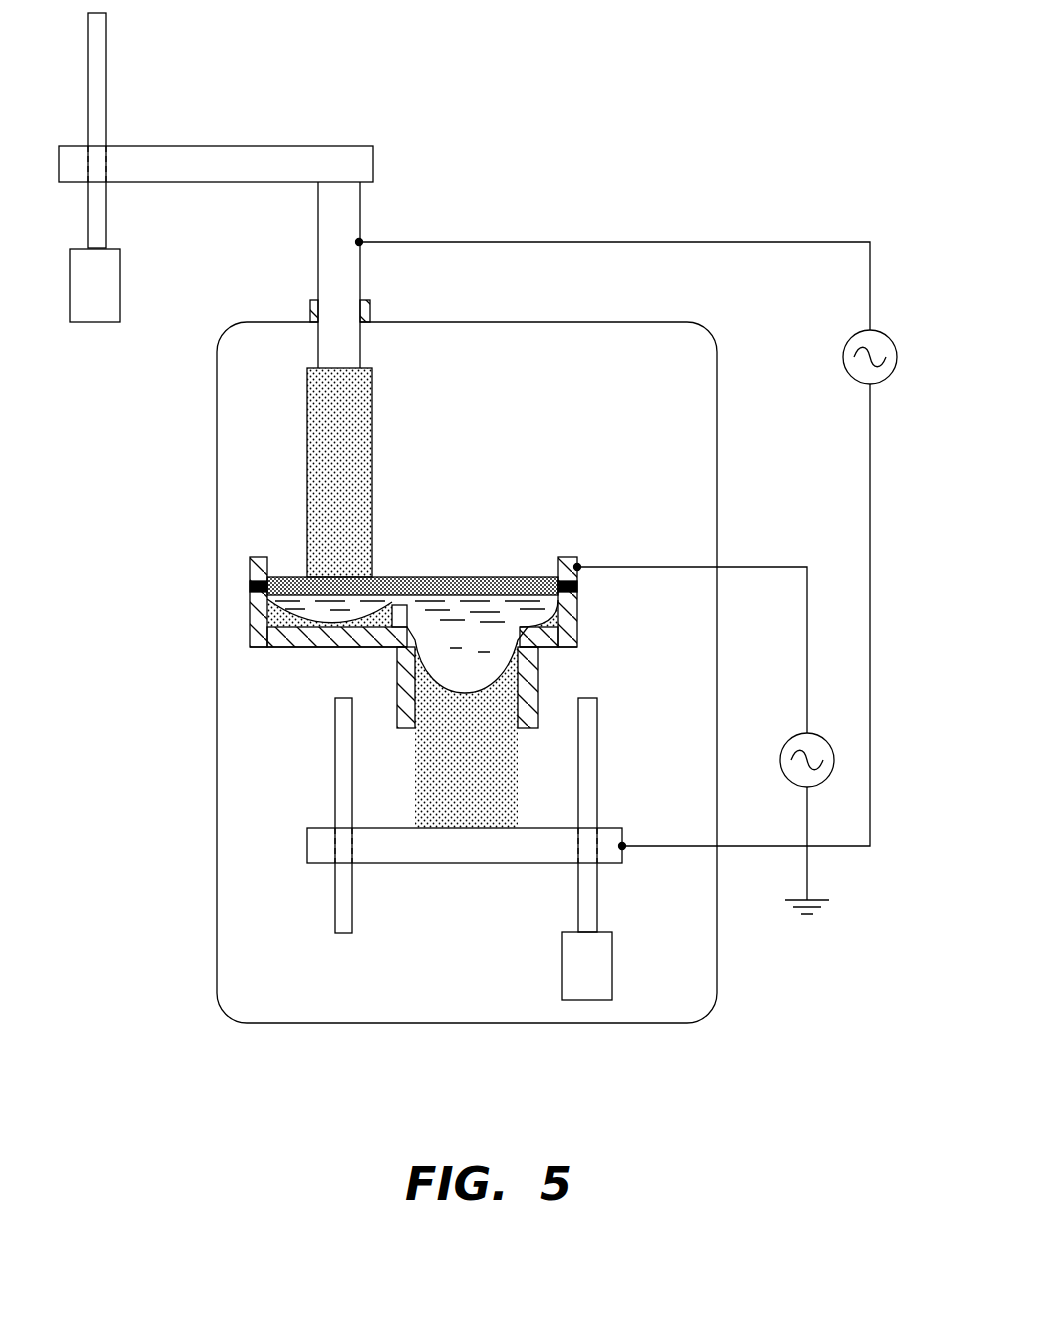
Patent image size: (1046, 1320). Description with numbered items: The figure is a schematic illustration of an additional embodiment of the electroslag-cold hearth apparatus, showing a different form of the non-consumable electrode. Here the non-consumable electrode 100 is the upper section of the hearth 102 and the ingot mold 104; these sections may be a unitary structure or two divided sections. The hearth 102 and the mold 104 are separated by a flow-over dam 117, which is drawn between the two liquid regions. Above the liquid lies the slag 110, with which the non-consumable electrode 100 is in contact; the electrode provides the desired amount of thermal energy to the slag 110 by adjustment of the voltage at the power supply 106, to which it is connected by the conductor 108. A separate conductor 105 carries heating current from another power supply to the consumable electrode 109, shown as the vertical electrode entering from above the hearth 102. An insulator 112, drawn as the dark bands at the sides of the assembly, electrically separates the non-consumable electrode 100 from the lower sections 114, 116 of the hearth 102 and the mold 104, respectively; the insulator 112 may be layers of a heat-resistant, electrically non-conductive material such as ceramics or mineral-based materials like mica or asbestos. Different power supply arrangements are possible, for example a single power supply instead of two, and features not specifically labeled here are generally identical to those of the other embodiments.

The non-consumable electrode 100 is at (260, 556).
The hearth 102 is at (262, 612).
The ingot mold 104 is at (570, 616).
The conductor 105 is at (870, 497).
The power supply 106 is at (781, 757).
The conductor 108 is at (758, 567).
The consumable electrode 109 is at (353, 415).
The slag 110 is at (480, 577).
The insulator 112 is at (263, 585).
The lower section of hearth 114 is at (255, 640).
The lower section of mold 116 is at (567, 642).
The flow-over dam 117 is at (399, 605).